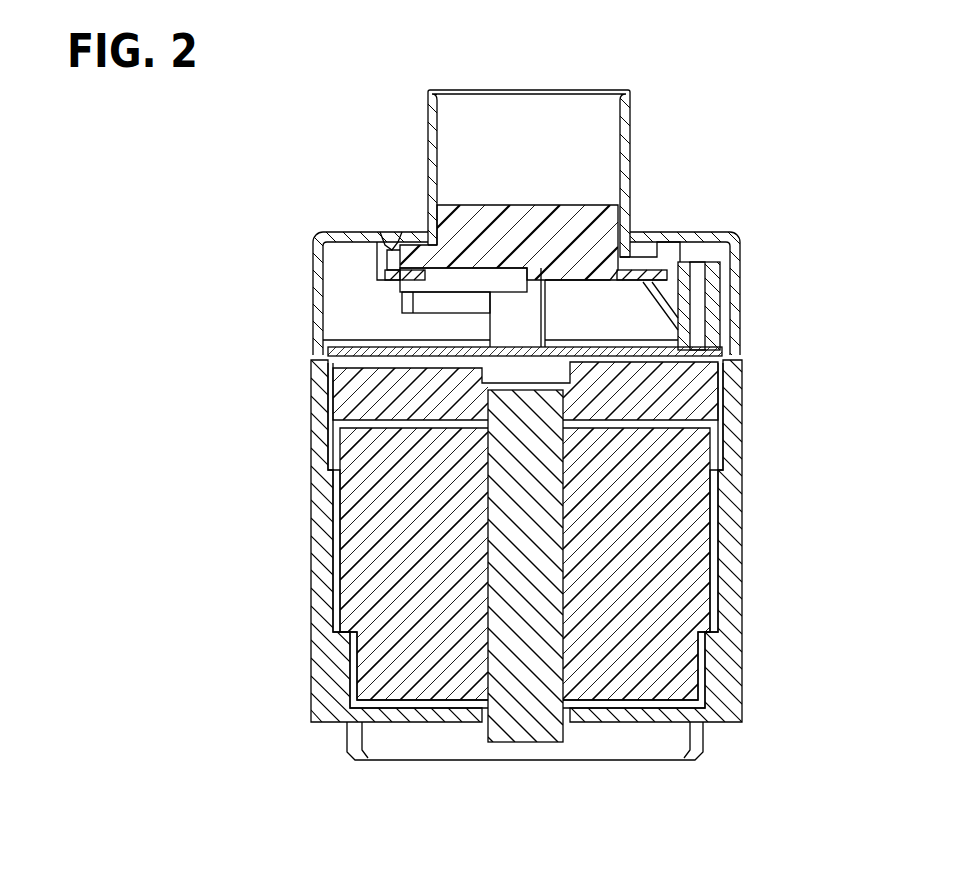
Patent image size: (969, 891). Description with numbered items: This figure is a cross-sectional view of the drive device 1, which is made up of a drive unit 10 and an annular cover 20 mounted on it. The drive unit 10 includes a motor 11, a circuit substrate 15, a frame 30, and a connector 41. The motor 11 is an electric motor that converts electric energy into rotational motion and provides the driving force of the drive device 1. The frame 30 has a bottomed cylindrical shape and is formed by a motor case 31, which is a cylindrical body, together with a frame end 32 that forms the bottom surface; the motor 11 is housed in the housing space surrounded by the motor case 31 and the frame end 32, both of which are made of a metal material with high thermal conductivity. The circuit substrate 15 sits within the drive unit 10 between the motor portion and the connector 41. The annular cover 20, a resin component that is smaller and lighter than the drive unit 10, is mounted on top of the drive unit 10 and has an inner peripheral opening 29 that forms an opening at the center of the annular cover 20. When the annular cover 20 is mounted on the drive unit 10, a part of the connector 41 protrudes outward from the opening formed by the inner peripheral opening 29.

The drive device 1 is at (304, 151).
The connector 41 is at (522, 135).
The inner peripheral opening 29 is at (402, 232).
The annular cover 20 is at (320, 297).
The circuit substrate 15 is at (358, 346).
The frame end 32 is at (355, 400).
The motor case 31 is at (320, 453).
The frame 30 is at (292, 504).
The motor 11 is at (398, 600).
The drive unit 10 is at (283, 733).